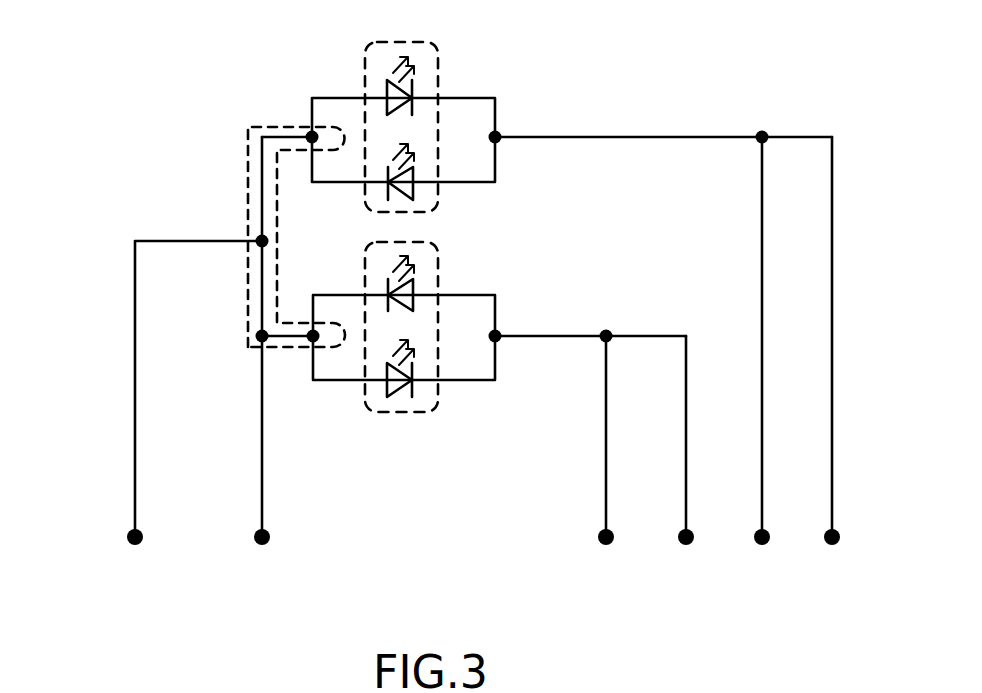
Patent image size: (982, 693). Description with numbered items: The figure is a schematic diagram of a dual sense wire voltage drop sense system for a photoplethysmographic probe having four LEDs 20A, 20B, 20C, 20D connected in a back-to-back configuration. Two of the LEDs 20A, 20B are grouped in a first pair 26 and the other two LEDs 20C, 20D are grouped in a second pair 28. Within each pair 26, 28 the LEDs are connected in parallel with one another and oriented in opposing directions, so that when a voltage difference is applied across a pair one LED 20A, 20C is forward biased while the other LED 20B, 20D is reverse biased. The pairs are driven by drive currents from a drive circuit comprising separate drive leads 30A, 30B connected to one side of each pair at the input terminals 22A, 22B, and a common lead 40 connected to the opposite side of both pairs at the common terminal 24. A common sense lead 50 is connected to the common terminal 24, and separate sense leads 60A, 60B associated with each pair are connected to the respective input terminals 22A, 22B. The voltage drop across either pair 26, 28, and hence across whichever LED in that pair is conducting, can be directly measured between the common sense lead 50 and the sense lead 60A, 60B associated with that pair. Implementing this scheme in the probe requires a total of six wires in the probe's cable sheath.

The LED 20A is at (386, 390).
The LED 20B is at (413, 290).
The LED 20C is at (412, 186).
The LED 20D is at (387, 92).
The input terminal 22A is at (497, 334).
The input terminal 22B is at (497, 134).
The common terminal 24 is at (248, 137).
The first pair 26 is at (438, 252).
The second pair 28 is at (438, 72).
The drive lead 30A is at (686, 375).
The drive lead 30B is at (832, 278).
The common lead 40 is at (262, 451).
The common sense lead 50 is at (135, 387).
The sense lead 60A is at (606, 436).
The sense lead 60B is at (762, 200).